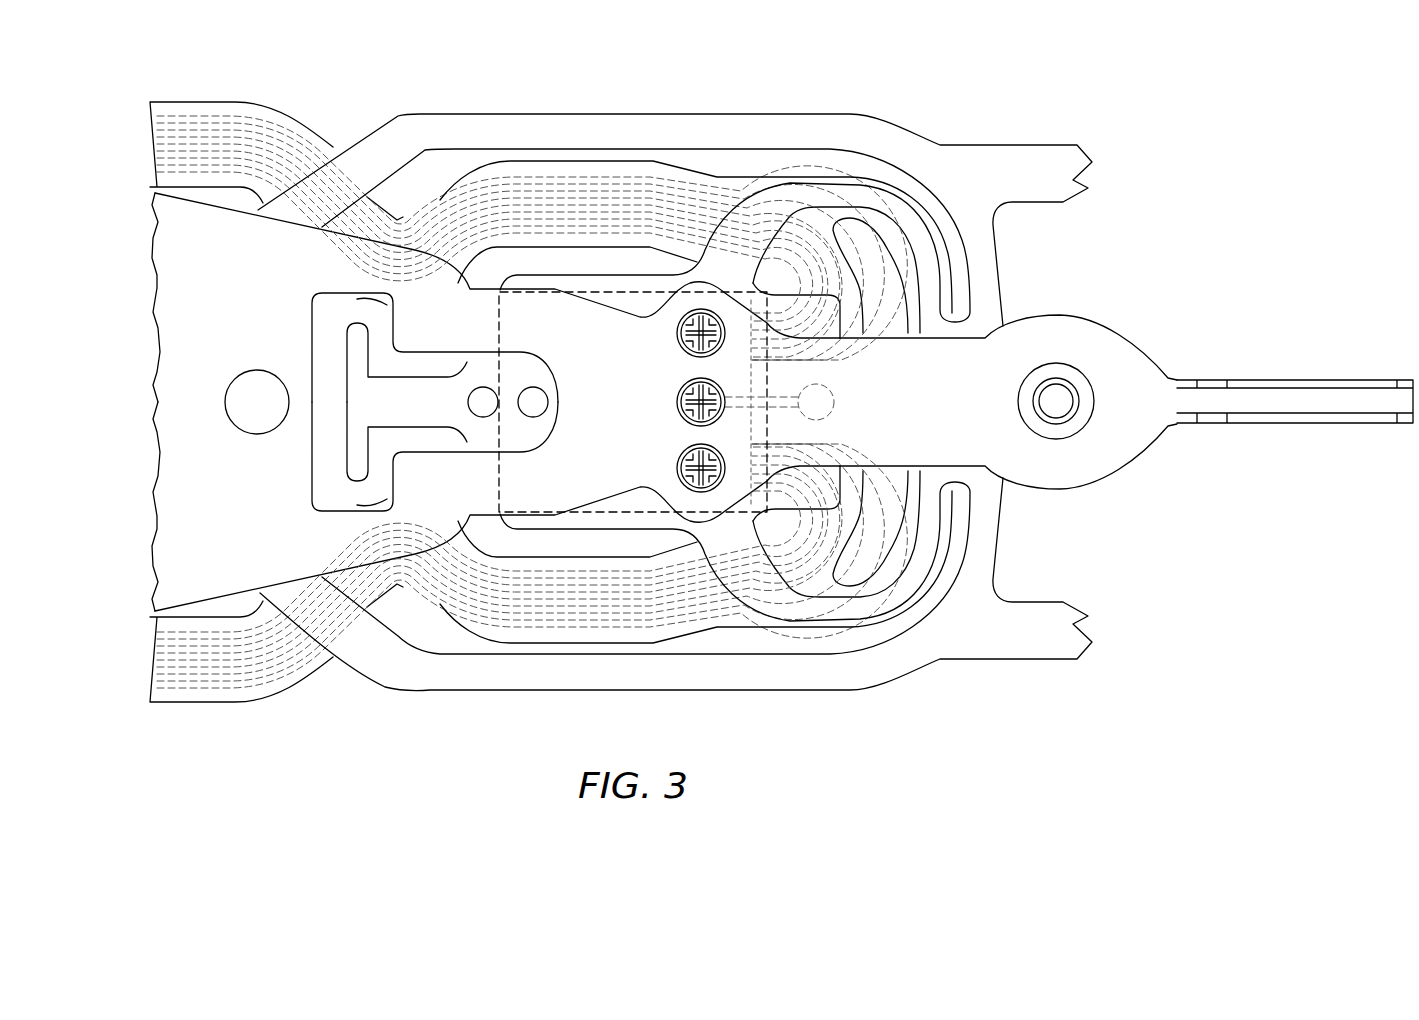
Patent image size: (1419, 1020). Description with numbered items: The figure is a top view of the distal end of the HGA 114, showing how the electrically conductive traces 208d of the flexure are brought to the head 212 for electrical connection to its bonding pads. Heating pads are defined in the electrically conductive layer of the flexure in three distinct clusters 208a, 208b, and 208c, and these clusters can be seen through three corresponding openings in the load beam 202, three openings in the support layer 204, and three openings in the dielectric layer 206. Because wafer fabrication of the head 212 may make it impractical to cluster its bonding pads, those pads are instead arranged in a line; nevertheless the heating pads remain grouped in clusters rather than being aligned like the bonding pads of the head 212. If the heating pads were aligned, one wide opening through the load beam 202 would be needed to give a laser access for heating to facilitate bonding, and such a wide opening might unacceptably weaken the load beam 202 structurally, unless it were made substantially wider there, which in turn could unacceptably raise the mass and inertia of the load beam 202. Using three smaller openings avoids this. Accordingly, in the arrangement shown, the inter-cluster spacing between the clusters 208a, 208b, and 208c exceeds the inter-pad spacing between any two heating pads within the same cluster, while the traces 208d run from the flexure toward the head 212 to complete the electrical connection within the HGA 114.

The HGA 114 is at (741, 407).
The load beam 202 is at (1320, 402).
The support layer 204 is at (1023, 648).
The dielectric layer 206 is at (737, 187).
The heating pad cluster 208a is at (678, 346).
The heating pad cluster 208b is at (678, 398).
The heating pad cluster 208c is at (678, 456).
The electrically conductive traces 208d is at (148, 113).
The head 212 is at (625, 500).